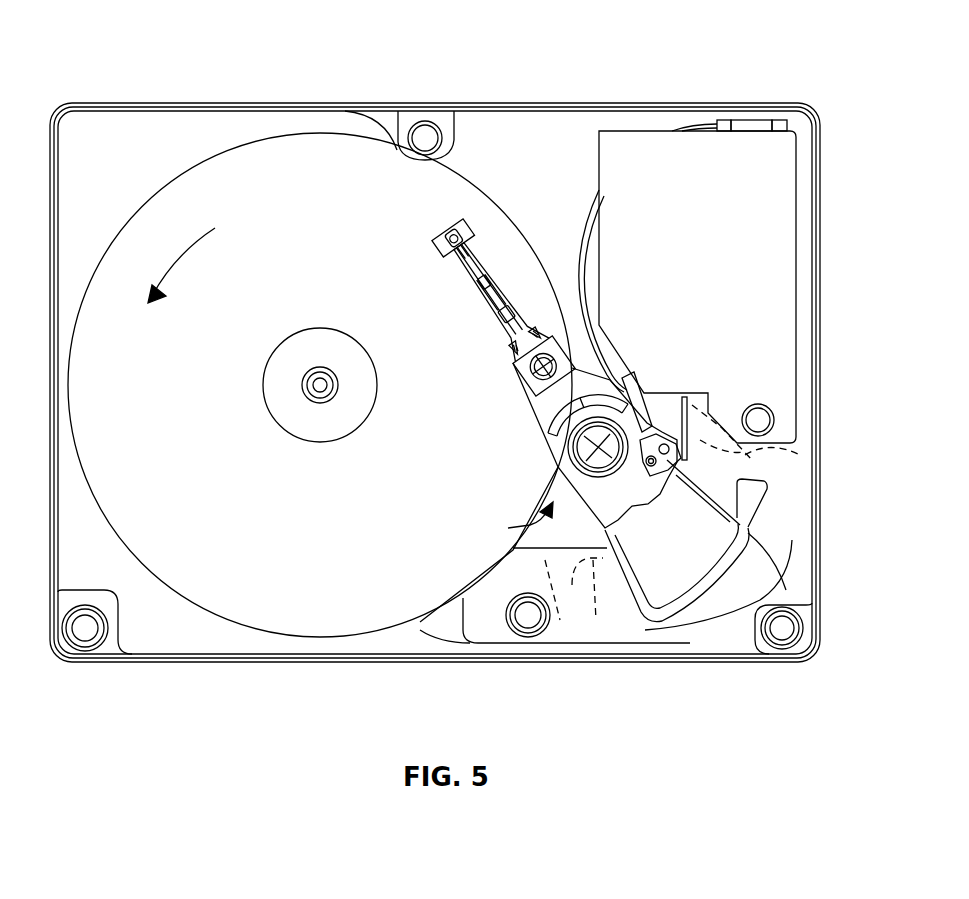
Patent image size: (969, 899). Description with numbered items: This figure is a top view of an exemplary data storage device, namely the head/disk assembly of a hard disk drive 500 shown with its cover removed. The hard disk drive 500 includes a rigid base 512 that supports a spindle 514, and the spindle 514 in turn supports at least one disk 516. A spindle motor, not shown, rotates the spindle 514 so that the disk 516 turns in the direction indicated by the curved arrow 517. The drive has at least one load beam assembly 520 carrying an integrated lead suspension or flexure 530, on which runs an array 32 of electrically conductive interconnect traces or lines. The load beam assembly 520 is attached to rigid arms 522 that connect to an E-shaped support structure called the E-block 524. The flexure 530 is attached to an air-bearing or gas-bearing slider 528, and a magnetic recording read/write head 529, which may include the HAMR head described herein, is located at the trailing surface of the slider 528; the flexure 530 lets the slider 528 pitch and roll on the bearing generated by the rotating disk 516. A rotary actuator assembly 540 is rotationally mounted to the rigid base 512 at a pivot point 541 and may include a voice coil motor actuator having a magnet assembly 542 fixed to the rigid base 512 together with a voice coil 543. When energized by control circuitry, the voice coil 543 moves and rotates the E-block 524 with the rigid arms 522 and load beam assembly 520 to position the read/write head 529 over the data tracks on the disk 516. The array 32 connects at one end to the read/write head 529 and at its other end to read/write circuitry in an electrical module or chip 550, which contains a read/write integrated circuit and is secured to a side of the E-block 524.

The hard disk drive 500 is at (122, 40).
The rigid base 512 is at (203, 667).
The spindle 514 is at (278, 350).
The disk 516 is at (306, 622).
The curved arrow 517 is at (198, 256).
The load beam assembly 520 is at (491, 277).
The rigid arms 522 is at (522, 382).
The E-block 524 is at (540, 440).
The slider 528 is at (470, 228).
The read/write head 529 is at (442, 232).
The flexure 530 is at (470, 250).
The array of electrically conductive interconnect traces 32 is at (478, 300).
The rotary actuator assembly 540 is at (509, 522).
The pivot point 541 is at (558, 467).
The magnet assembly 542 is at (700, 437).
The voice coil 543 is at (752, 533).
The electrical module or chip 550 is at (640, 400).